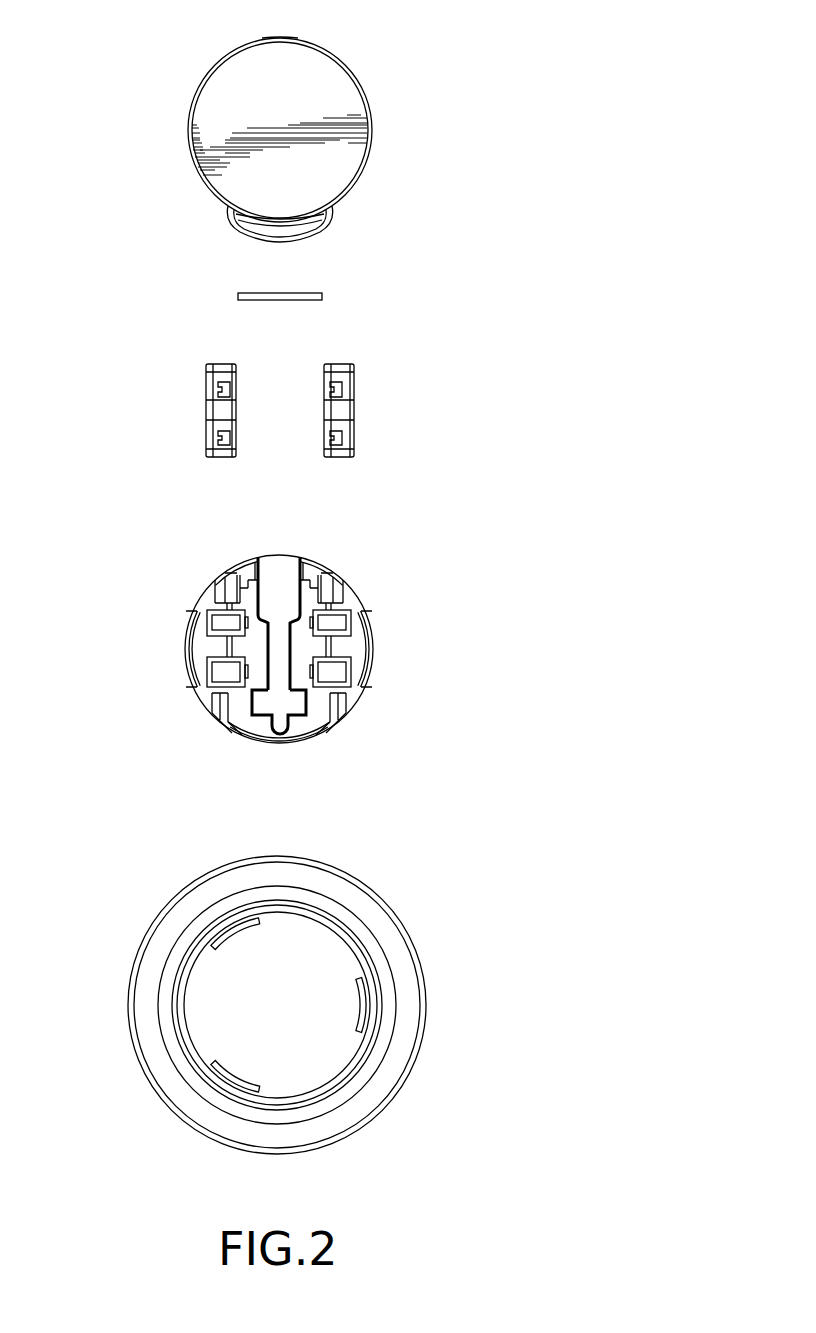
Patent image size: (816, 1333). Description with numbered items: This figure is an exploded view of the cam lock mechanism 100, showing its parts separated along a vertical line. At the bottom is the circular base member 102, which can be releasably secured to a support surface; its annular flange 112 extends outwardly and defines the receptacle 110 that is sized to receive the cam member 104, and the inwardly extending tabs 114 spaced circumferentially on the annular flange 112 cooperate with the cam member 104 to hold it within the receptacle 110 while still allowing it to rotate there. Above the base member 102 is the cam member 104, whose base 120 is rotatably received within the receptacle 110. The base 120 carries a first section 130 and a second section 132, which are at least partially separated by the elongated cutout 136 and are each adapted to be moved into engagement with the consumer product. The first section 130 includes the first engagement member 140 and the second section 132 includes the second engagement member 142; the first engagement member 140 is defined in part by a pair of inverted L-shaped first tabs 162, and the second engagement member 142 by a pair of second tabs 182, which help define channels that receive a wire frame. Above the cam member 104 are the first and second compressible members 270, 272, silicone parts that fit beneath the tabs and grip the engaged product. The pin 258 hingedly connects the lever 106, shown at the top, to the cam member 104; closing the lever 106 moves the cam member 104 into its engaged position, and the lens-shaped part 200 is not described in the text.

The cam lock mechanism 100 is at (560, 452).
The base member 102 is at (487, 958).
The cam member 104 is at (135, 665).
The lever 106 is at (450, 112).
The receptacle 110 is at (330, 942).
The annular flange 112 is at (242, 1097).
The tabs 114 is at (227, 935).
The base 120 is at (263, 722).
The first section 130 is at (196, 702).
The second section 132 is at (360, 702).
The elongated cutout 136 is at (262, 605).
The first engagement member 140 is at (237, 598).
The second engagement member 142 is at (355, 600).
The first tabs 162 is at (208, 604).
The second tabs 182 is at (355, 622).
The lens 200 is at (341, 92).
The pin 258 is at (302, 292).
The first compressible member 270 is at (146, 383).
The second compressible member 272 is at (382, 378).